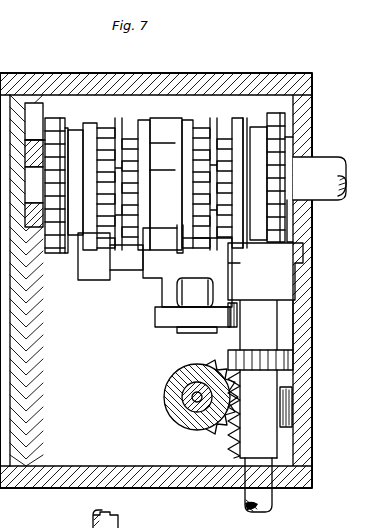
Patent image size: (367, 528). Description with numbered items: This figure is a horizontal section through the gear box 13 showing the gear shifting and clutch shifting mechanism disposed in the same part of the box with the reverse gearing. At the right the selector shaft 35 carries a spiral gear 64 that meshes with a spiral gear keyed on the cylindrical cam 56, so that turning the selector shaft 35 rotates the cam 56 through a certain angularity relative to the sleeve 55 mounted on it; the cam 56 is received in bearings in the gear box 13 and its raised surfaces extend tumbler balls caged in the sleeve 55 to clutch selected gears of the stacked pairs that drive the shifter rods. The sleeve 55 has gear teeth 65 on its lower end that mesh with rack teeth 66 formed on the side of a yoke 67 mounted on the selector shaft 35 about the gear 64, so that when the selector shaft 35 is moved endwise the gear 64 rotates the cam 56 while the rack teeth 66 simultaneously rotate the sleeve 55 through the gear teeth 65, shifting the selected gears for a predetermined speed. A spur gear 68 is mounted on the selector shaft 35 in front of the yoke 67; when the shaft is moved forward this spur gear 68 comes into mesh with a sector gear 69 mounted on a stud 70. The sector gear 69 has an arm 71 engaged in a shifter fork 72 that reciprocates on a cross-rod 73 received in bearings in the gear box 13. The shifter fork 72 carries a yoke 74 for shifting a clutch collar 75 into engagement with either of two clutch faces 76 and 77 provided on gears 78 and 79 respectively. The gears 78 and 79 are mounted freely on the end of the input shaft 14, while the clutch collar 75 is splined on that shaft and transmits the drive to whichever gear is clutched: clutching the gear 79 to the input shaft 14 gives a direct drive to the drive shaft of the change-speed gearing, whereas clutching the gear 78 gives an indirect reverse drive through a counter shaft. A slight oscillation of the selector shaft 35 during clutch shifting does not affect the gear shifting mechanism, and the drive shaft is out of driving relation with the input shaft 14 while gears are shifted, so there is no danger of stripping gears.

The gear box 13 is at (310, 402).
The input shaft 14 is at (322, 170).
The selector shaft 35 is at (285, 497).
The sleeve 55 is at (178, 395).
The cylindrical cam 56 is at (182, 407).
The spiral gear 64 is at (290, 392).
The gear teeth 65 is at (175, 363).
The rack teeth 66 is at (228, 440).
The yoke 67 is at (280, 441).
The spur gear 68 is at (288, 352).
The sector gear 69 is at (232, 330).
The stud 70 is at (172, 334).
The arm 71 is at (190, 292).
The shifter fork 72 is at (231, 293).
The cross-rod 73 is at (122, 258).
The yoke 74 is at (166, 178).
The clutch collar 75 is at (144, 128).
The clutch face 76 is at (224, 126).
The clutch face 77 is at (95, 128).
The gear 78 is at (276, 115).
The gear 79 is at (58, 118).